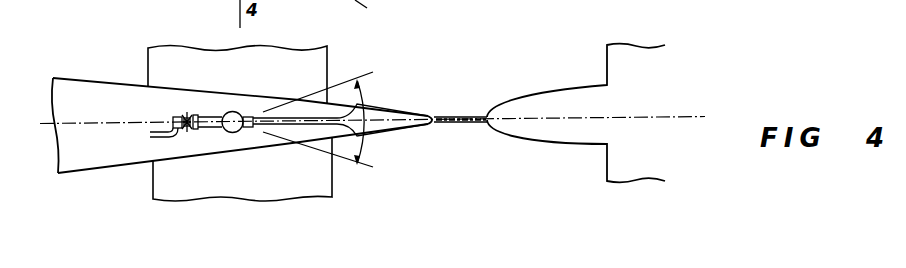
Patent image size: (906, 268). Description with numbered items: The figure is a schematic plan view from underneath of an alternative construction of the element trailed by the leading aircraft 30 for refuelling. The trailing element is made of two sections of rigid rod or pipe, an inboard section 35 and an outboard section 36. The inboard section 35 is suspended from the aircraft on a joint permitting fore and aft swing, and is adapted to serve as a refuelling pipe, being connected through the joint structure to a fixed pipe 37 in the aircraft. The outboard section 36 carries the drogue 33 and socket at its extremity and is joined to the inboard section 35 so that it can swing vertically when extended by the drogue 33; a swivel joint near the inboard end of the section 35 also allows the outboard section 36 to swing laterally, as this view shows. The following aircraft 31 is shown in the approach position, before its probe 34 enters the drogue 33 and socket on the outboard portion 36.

The leading aircraft 30 is at (87, 76).
The following aircraft 31 is at (580, 80).
The drogue 33 is at (356, 104).
The probe 34 is at (445, 123).
The inboard section 35 is at (215, 115).
The outboard section 36 is at (268, 114).
The fixed pipe 37 is at (160, 137).